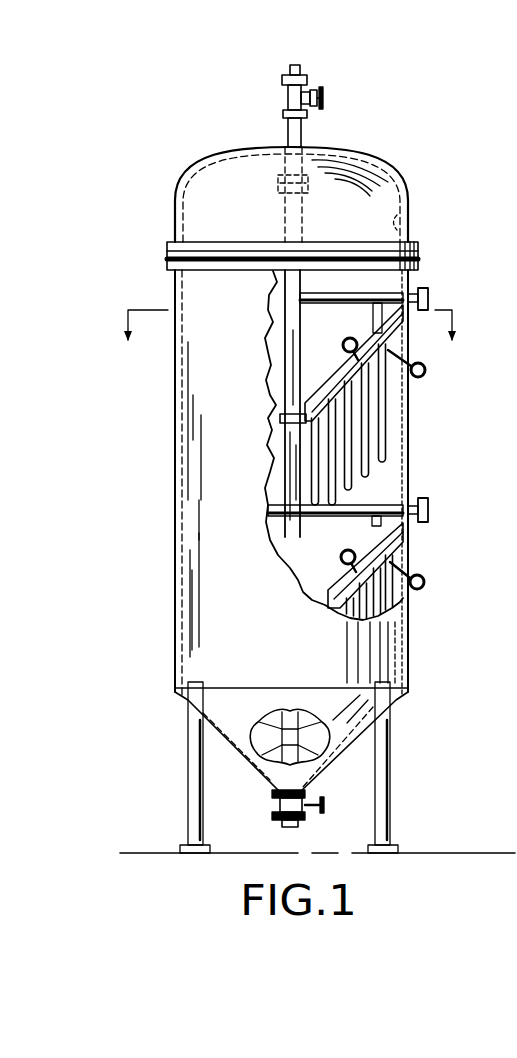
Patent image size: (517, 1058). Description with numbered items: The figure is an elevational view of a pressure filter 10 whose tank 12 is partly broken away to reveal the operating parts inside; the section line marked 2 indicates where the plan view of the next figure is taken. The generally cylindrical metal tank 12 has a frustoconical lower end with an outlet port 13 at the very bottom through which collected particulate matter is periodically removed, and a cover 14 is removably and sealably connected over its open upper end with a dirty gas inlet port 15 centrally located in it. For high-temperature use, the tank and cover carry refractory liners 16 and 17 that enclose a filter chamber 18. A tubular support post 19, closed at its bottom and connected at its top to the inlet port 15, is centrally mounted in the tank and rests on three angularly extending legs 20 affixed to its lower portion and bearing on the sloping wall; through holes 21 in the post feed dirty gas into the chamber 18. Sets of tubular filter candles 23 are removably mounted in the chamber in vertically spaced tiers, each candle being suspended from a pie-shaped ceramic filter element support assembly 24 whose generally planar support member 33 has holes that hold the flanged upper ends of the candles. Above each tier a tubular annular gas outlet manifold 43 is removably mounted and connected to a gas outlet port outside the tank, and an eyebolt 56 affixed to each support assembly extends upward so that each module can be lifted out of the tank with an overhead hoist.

The filter 10 is at (388, 143).
The tank 12 is at (172, 524).
The outlet port 13 is at (275, 810).
The cover 14 is at (188, 176).
The dirty gas inlet port 15 is at (289, 130).
The refractory liner 16 is at (393, 478).
The refractory liner 17 is at (405, 227).
The filter chamber 18 is at (333, 556).
The tubular support post 19 is at (302, 201).
The legs 20 is at (266, 733).
The through holes 21 is at (288, 316).
The tubular filter elements 23 is at (388, 430).
The filter element support assembly 24 is at (311, 394).
The support member 33 is at (310, 424).
The gas outlet manifold 43 is at (367, 293).
The eyebolt 56 is at (390, 368).
The section line 2- 2 is at (292, 339).